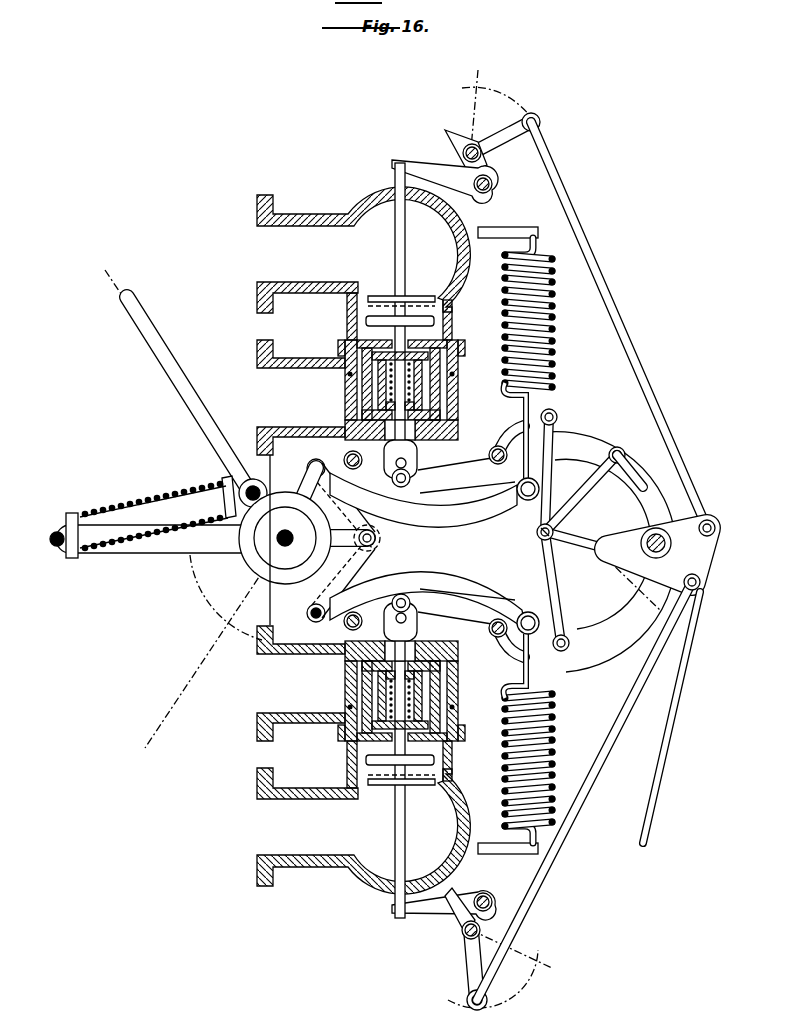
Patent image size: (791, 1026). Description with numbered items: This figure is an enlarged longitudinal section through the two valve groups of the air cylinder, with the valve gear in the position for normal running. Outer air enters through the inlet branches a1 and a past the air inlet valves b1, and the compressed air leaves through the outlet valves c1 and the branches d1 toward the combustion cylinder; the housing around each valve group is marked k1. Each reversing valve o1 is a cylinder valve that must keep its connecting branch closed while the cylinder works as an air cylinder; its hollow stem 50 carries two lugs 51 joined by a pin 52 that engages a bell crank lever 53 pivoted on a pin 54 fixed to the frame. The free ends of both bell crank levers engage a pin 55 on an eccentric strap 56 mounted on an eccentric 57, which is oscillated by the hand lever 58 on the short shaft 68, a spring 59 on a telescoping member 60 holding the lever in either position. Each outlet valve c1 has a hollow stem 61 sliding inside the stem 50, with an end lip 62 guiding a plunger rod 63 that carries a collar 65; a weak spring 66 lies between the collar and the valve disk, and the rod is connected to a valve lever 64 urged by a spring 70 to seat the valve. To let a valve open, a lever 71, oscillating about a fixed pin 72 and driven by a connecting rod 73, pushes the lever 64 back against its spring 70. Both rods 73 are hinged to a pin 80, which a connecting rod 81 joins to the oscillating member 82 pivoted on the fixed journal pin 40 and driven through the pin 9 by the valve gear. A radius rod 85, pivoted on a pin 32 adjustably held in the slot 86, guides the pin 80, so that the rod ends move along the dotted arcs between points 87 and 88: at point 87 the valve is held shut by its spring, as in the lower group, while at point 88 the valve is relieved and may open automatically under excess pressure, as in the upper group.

The inlet branch a1 is at (256, 253).
The lower valve casing a is at (256, 828).
The air inlet valve b1 is at (395, 253).
The branch d1 is at (258, 395).
The reversing valve o1 is at (356, 356).
The outlet valve c1 is at (412, 362).
The housing boss k1 is at (462, 352).
The hollow stem 61 is at (378, 385).
The collar 65 is at (392, 400).
The end lip 62 is at (388, 408).
The weak spring 66 is at (454, 375).
The hollow stem 50 is at (440, 425).
The plunger rod 63 is at (408, 445).
The pin 52 is at (406, 464).
The lug 51 is at (410, 480).
The bell crank lever 53 is at (318, 462).
The pin 54 is at (347, 460).
The pin 55 is at (380, 538).
The eccentric strap 56 is at (305, 574).
The eccentric 57 is at (326, 525).
The hand lever 58 is at (158, 372).
The spring 59 is at (148, 500).
The telescoping member 60 is at (145, 553).
The valve lever 64 is at (466, 580).
The short shaft 68 is at (285, 538).
The spring 70 is at (556, 331).
The lever 71 is at (499, 446).
The fixed pin 72 is at (525, 612).
The connecting rod 73 is at (548, 475).
The pin 80 is at (536, 534).
The connecting rod 81 is at (566, 537).
The oscillating member 82 is at (715, 556).
The radius rod 85 is at (588, 486).
The slot 86 is at (626, 454).
The pin 32 is at (624, 447).
The fixed journal pin 40 is at (655, 528).
The arc point 87 is at (560, 430).
The arc point 88 is at (558, 412).
The pin 9 is at (700, 590).